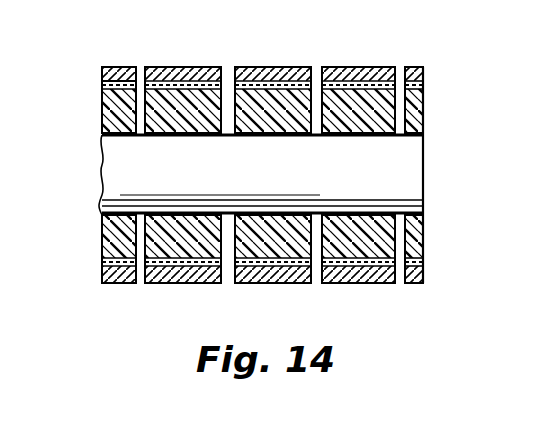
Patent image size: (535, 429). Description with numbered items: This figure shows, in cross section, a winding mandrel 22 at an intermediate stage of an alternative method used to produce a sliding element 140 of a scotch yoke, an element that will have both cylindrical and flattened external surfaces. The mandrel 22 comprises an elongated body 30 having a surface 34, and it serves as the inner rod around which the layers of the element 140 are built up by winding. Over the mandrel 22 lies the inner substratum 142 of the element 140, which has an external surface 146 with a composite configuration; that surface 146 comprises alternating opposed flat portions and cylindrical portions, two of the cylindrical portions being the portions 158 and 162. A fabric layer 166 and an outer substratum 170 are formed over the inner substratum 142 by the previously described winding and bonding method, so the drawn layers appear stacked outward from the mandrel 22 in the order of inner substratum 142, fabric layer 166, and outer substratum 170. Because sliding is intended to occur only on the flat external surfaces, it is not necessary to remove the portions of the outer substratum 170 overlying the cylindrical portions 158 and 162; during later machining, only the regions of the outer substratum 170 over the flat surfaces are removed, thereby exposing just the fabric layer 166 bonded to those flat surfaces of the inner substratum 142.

The mandrel 22 is at (403, 171).
The elongated body 30 is at (286, 178).
The surface 34 is at (408, 130).
The sliding element 140 is at (234, 67).
The inner substratum 142 is at (108, 112).
The external surface 146 is at (296, 68).
The cylindrical portion 158 is at (127, 67).
The cylindrical portion 162 is at (287, 266).
The fabric layer 166 is at (415, 268).
The outer substratum 170 is at (198, 283).